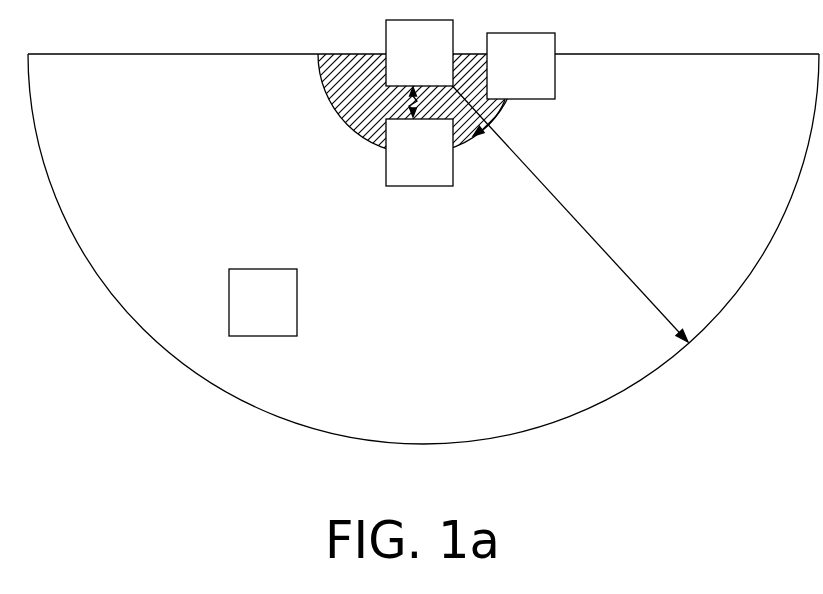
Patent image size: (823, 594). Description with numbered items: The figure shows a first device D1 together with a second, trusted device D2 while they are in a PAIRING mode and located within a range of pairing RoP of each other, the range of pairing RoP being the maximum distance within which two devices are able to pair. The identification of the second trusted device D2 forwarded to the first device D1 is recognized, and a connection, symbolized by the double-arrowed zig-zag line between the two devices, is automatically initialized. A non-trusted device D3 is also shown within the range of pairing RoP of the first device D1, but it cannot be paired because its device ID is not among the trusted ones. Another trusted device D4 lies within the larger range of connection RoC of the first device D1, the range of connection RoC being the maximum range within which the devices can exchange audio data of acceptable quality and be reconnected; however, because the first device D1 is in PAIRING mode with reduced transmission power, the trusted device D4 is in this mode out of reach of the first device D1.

The first device D1 is at (419, 53).
The second trusted device D2 is at (419, 152).
The non-trusted device D3 is at (521, 66).
The trusted device D4 is at (263, 302).
The range of pairing RoP is at (371, 132).
The range of connection RoC is at (660, 312).